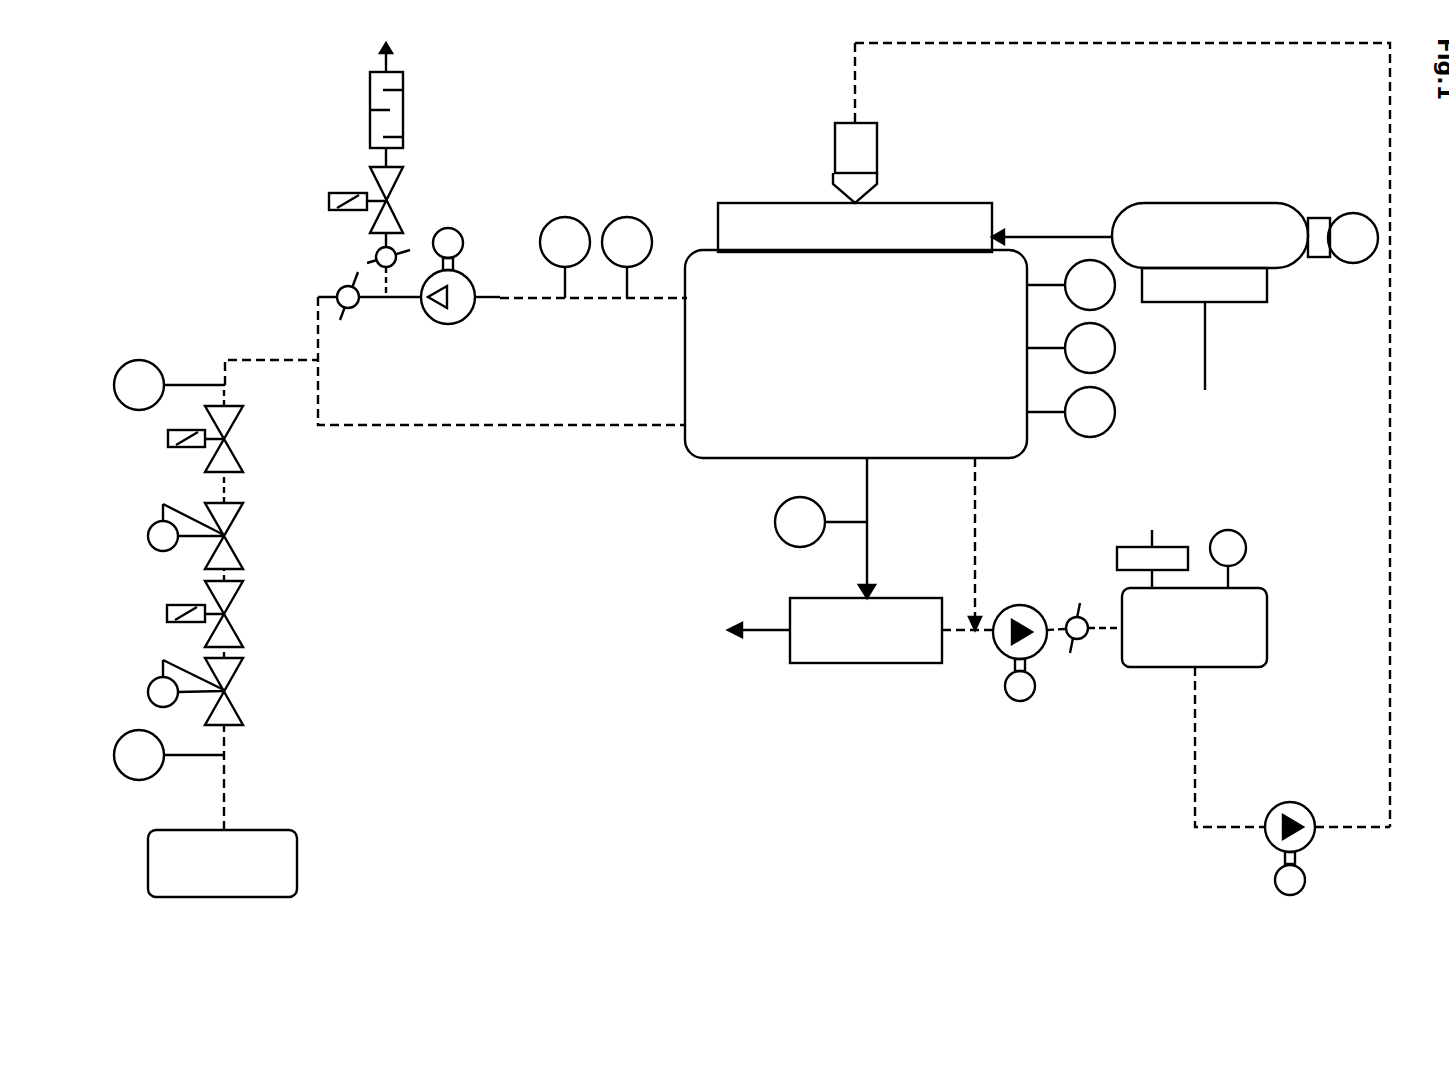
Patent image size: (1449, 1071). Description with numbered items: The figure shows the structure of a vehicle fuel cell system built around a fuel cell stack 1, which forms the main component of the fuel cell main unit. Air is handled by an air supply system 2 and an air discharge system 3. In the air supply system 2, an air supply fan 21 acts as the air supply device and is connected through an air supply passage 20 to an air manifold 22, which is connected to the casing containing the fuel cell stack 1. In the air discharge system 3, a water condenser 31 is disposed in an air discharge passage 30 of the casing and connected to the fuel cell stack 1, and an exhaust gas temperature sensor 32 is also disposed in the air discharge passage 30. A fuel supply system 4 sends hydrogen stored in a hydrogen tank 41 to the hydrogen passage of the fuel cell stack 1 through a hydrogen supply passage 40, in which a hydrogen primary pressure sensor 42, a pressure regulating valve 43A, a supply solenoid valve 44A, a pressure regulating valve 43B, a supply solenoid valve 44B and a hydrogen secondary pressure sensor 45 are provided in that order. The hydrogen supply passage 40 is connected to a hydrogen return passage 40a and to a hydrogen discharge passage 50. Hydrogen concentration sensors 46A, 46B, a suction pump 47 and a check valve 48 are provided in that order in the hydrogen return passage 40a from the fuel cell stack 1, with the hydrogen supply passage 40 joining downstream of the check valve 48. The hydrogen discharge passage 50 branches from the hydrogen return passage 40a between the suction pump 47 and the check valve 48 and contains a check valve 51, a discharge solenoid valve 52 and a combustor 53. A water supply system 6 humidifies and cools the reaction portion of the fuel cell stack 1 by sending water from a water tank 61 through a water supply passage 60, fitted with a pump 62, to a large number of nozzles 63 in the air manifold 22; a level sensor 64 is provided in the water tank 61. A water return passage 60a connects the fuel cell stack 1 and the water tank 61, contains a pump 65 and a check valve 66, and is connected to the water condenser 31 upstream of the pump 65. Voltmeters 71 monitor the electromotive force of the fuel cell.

The fuel cell stack 1 is at (692, 456).
The air supply system 2 is at (1178, 188).
The air discharge system 3 is at (996, 514).
The fuel supply system 4 is at (398, 520).
The water supply system 6 is at (1183, 744).
The air supply passage 20 is at (1057, 233).
The air supply fan 21 is at (1260, 205).
The air manifold 22 is at (937, 203).
The air discharge passage 30 is at (867, 515).
The water condenser 31 is at (860, 660).
The exhaust gas temperature sensor 32 is at (775, 522).
The hydrogen supply passage 40 is at (225, 790).
The hydrogen return passage 40a is at (508, 300).
The hydrogen tank 41 is at (297, 858).
The hydrogen primary pressure sensor 42 is at (137, 780).
The pressure regulating valve 43A is at (243, 692).
The pressure regulating valve 43B is at (243, 545).
The supply solenoid valve 44A is at (243, 618).
The supply solenoid valve 44B is at (240, 448).
The hydrogen secondary pressure sensor 45 is at (141, 360).
The hydrogen concentration sensor 46A is at (625, 217).
The hydrogen concentration sensor 46B is at (567, 217).
The suction pump 47 is at (448, 324).
The check valve 48 is at (348, 308).
The hydrogen discharge passage 50 is at (386, 156).
The check valve 51 is at (376, 257).
The discharge solenoid valve 52 is at (403, 200).
The combustor 53 is at (403, 115).
The water supply passage 60 is at (1390, 497).
The water return passage 60a is at (990, 632).
The water tank 61 is at (1232, 658).
The pump 62 is at (1290, 805).
The nozzles 63 is at (877, 148).
The level sensor 64 is at (1242, 536).
The pump 65 is at (1026, 606).
The check valve 66 is at (1083, 640).
The voltmeters 71 is at (1110, 295).